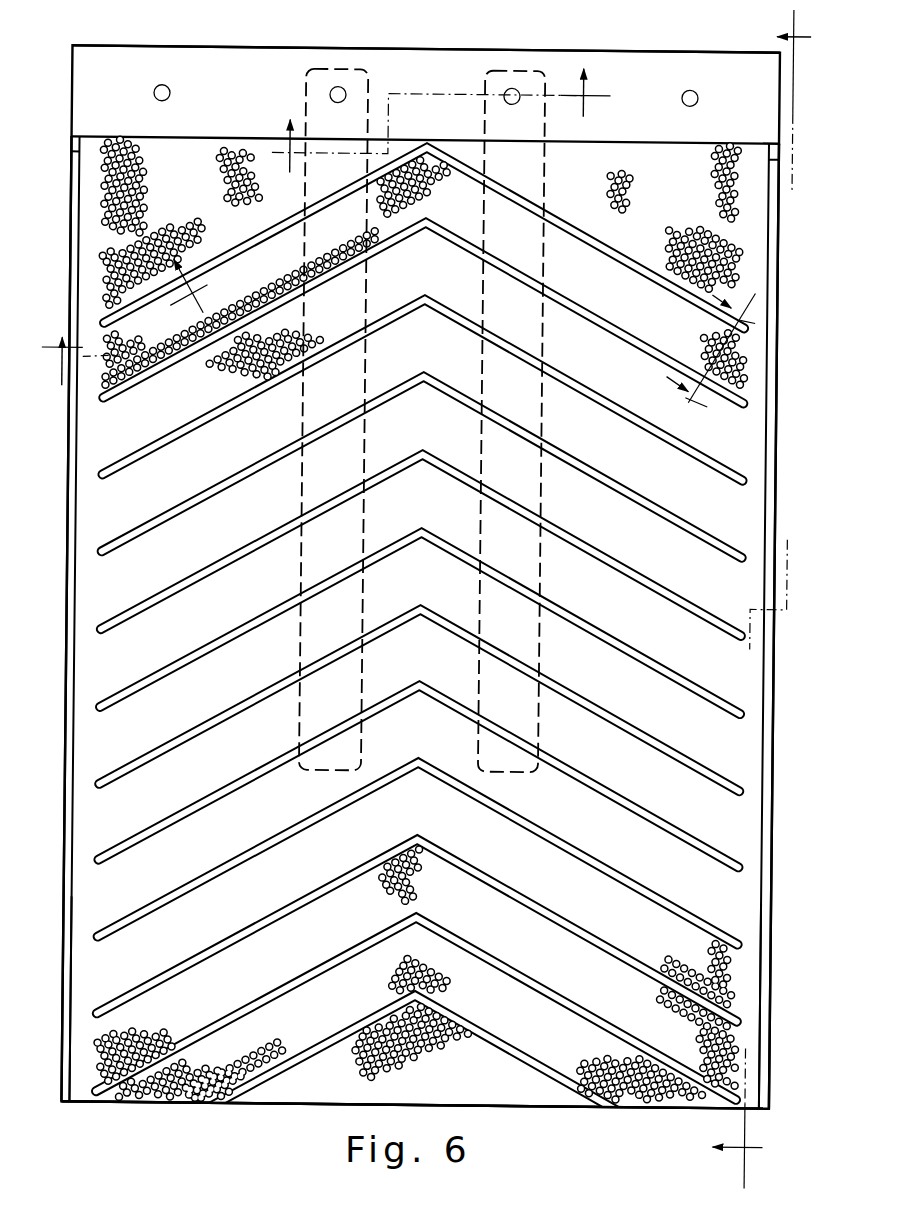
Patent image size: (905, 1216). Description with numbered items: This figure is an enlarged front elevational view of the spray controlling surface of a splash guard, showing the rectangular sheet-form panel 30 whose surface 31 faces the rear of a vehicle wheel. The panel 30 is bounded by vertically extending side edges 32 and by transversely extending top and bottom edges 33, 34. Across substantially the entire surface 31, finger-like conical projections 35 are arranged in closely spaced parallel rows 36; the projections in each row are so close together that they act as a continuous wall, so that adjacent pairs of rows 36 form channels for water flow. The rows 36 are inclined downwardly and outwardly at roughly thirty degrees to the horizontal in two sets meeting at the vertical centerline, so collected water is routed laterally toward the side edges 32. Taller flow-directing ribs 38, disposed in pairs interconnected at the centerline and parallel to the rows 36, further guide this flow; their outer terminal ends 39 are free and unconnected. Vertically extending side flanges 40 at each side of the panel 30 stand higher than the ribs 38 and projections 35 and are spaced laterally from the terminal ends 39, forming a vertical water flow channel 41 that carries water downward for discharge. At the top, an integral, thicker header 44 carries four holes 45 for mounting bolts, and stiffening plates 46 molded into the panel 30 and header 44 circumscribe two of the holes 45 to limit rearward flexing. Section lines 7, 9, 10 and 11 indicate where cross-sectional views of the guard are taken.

The sheet-form panel 30 is at (521, 1107).
The surface 31 is at (690, 185).
The side edges 32 is at (67, 745).
The top edge 33 is at (603, 48).
The bottom edge 34 is at (182, 1106).
The projections 35 is at (745, 367).
The rows of projections 36 is at (96, 388).
The flow-directing ribs 38 is at (600, 231).
The outer terminal ends 39 is at (752, 788).
The side flanges 40 is at (67, 541).
The water flow channel 41 is at (746, 907).
The header 44 is at (227, 63).
The holes 45 is at (149, 91).
The mounting tabs 46 is at (474, 70).
The section line 7- 7 is at (762, 599).
The section line 9- 9 is at (129, 322).
The section line 10- 10 is at (718, 361).
The section line 11- 11 is at (440, 125).